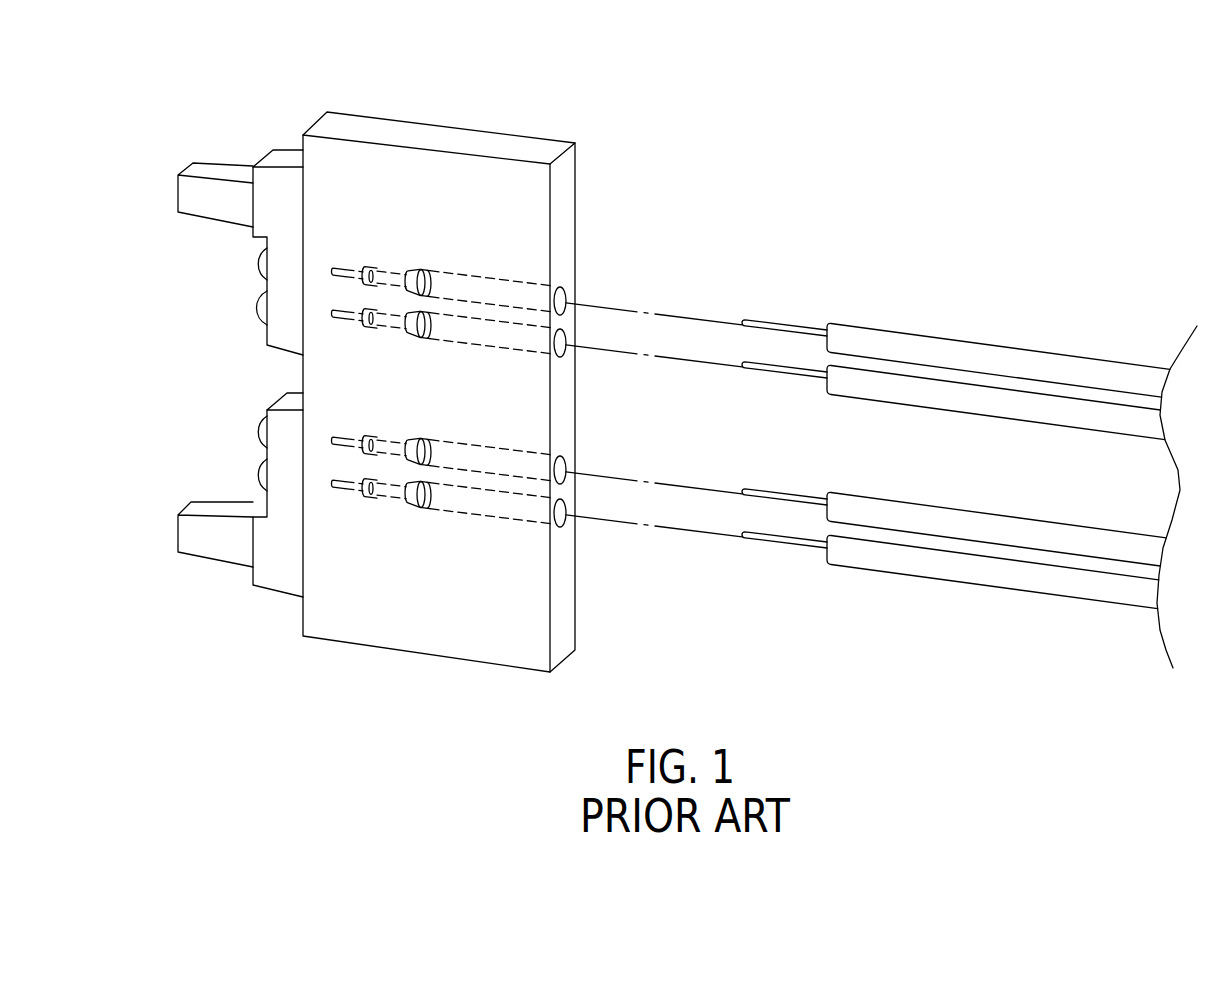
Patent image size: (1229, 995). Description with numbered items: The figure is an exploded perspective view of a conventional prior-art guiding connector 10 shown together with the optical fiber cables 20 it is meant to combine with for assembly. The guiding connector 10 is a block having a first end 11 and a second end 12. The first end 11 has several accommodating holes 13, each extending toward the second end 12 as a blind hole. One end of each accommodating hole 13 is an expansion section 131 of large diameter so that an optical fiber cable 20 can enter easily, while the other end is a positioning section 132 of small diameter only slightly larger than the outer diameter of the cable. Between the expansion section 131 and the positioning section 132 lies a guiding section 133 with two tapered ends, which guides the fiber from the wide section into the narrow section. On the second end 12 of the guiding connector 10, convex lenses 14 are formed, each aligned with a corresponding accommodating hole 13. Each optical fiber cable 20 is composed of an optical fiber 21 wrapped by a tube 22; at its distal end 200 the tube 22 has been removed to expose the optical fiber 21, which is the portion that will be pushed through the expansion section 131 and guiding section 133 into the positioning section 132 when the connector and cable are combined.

The guiding connector 10 is at (323, 121).
The first end 11 is at (567, 263).
The second end 12 is at (285, 328).
The accommodating hole 13 is at (567, 295).
The expansion section 131 is at (495, 290).
The positioning section 132 is at (353, 270).
The guiding section 133 is at (395, 275).
The convex lens 14 is at (258, 307).
The optical fiber cable 20 is at (980, 347).
The optical fiber 21 is at (783, 332).
The distal end 200 is at (654, 420).
The tube 22 is at (903, 343).